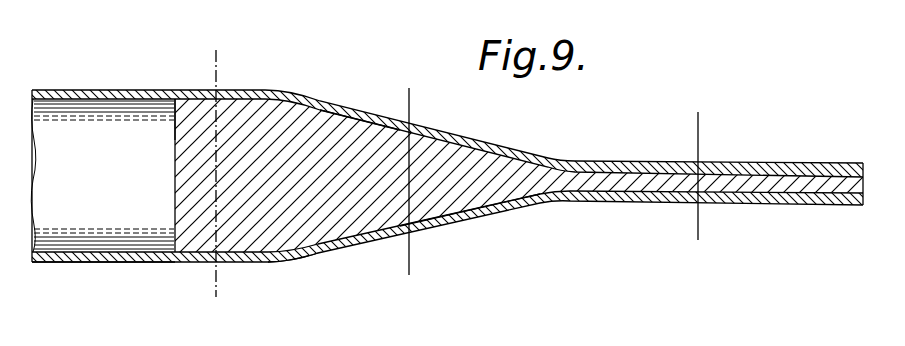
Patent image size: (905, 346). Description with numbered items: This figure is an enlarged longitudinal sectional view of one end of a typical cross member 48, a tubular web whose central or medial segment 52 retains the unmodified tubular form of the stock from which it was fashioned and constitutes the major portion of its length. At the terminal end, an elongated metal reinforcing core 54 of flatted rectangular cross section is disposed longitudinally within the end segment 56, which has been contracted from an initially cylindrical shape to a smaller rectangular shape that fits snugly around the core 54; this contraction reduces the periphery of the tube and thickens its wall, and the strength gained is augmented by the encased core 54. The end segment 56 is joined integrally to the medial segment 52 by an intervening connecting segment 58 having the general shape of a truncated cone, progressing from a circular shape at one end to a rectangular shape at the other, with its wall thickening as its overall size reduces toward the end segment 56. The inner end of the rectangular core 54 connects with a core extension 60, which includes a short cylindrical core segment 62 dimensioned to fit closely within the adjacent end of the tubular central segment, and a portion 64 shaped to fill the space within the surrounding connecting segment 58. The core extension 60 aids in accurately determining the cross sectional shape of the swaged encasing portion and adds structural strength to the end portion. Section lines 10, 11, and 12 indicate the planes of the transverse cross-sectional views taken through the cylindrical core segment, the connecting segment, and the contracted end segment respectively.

The section line 10- 10 is at (243, 290).
The section line 11- 11 is at (433, 268).
The section line 12- 12 is at (722, 235).
The cross member 48 is at (117, 271).
The medial segment 52 is at (100, 90).
The reinforcing core 54 is at (782, 186).
The end segment 56 is at (795, 204).
The connecting segment 58 is at (470, 215).
The core extension 60 is at (293, 269).
The cylindrical core segment 62 is at (195, 110).
The core extension portion 64 is at (350, 143).